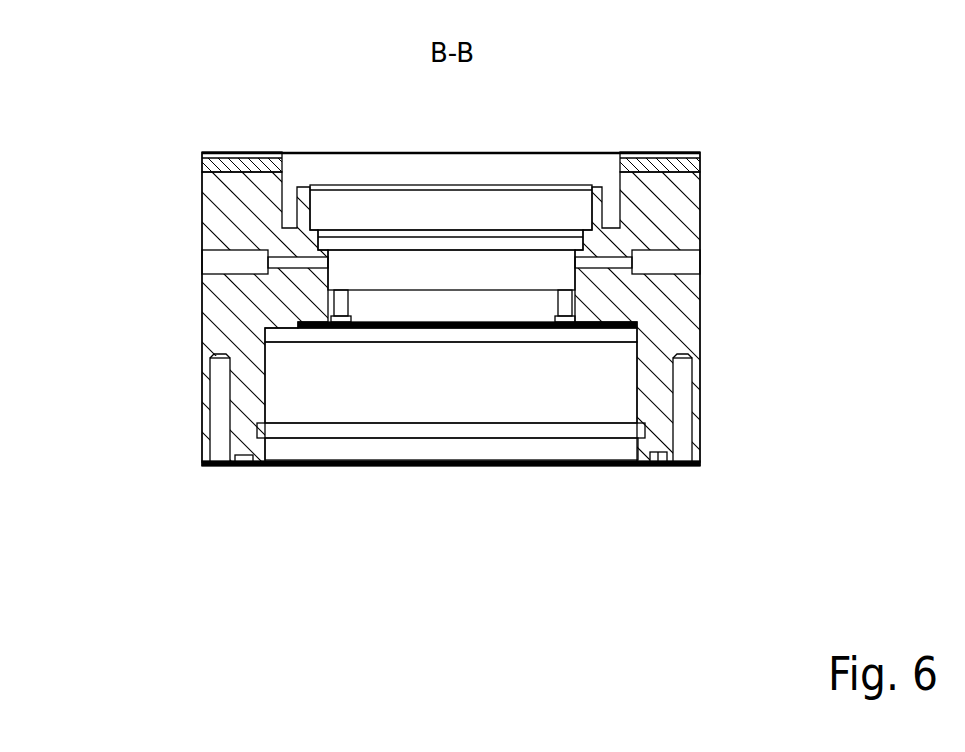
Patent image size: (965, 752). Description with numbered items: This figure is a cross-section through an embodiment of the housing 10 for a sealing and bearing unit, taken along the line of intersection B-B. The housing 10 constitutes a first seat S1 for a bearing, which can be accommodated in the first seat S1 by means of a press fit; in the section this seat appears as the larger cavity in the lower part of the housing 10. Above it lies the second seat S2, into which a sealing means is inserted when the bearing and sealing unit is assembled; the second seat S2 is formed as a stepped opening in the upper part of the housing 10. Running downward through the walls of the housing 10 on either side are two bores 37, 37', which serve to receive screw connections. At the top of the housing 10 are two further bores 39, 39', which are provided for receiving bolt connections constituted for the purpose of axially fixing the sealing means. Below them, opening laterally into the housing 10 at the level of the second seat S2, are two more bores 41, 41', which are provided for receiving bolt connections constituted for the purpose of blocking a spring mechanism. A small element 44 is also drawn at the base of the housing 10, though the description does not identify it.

The housing 10 is at (305, 588).
The bore 39 is at (396, 160).
The bore 39' is at (498, 134).
The bore 41 is at (204, 247).
The bore 41' is at (691, 229).
The second seat S2 is at (357, 211).
The first seat S1 is at (285, 378).
The bore 37 is at (173, 467).
The bore 37' is at (755, 436).
The support foot 44 is at (658, 463).